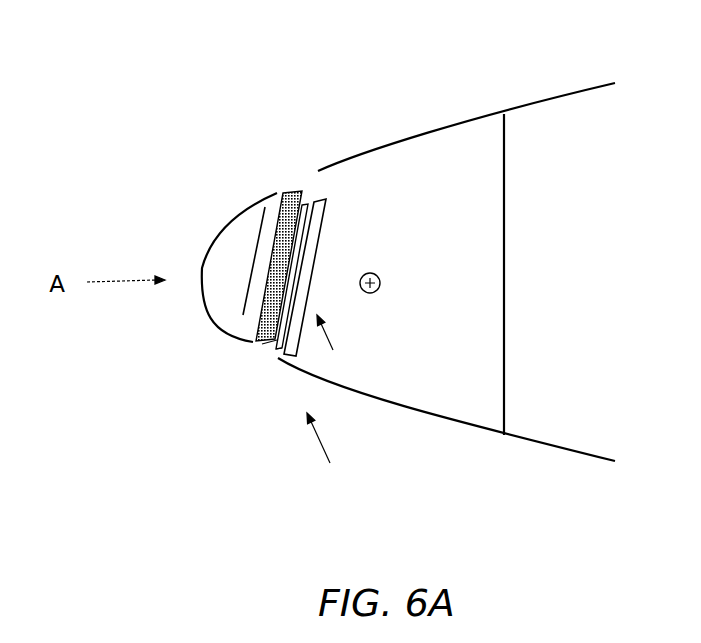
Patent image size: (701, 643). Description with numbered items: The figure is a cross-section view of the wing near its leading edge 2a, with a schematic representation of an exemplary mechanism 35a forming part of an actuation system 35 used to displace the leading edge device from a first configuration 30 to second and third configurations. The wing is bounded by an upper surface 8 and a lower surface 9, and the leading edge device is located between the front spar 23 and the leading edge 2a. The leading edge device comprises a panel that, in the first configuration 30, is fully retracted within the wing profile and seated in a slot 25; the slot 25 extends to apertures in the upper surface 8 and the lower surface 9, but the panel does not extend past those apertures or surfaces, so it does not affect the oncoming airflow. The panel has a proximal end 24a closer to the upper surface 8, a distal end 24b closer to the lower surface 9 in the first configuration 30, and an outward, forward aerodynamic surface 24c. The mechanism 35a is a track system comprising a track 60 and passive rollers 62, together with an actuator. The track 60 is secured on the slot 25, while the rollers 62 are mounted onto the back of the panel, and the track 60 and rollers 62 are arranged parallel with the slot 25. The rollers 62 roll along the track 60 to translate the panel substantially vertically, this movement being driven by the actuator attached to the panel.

The upper surface 8 is at (465, 120).
The lower surface 9 is at (543, 443).
The front spar 23 is at (507, 328).
The leading edge 2a is at (203, 258).
The slot 25 is at (265, 207).
The outward surface 24c is at (283, 193).
The proximal end 24a is at (307, 200).
The track 60 is at (316, 222).
The passive rollers 62 is at (268, 342).
The distal end 24b is at (270, 347).
The actuation system 35 is at (380, 292).
The mechanism 35a is at (345, 347).
The first configuration 30 is at (331, 457).